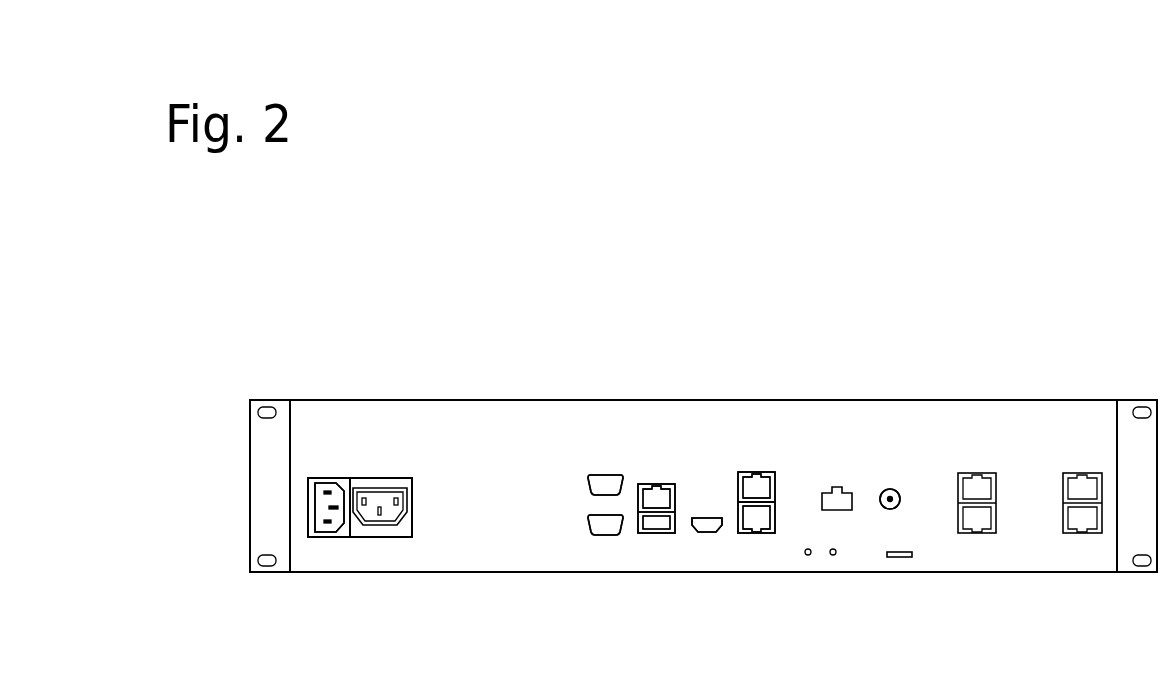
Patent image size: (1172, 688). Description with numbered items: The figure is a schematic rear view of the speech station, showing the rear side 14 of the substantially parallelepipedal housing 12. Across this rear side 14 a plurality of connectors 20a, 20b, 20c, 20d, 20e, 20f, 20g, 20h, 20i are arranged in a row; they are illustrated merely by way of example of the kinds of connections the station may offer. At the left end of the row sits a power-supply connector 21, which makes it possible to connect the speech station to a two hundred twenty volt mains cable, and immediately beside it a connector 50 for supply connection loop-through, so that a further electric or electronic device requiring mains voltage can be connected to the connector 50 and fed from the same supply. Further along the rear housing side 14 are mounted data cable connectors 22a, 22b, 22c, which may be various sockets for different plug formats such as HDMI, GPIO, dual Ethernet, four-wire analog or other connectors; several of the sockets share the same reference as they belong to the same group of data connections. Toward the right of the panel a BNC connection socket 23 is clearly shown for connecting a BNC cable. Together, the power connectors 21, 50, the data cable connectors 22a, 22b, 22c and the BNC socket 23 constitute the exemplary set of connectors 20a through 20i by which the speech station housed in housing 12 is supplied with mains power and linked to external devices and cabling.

The housing 12 is at (463, 553).
The rear side of the housing 14 is at (1016, 362).
The connector 20a is at (329, 468).
The connector 20b is at (402, 468).
The connector 20c is at (609, 466).
The connector 20d is at (628, 506).
The connector 20e is at (678, 472).
The connector 20f is at (708, 510).
The connector 20g is at (778, 466).
The connector 20h is at (789, 510).
The connector 20i is at (897, 482).
The power-supply connector 21 is at (337, 537).
The connector for supply connection loop-through 50 is at (381, 537).
The data cable connector 22a is at (588, 493).
The data cable connector 22b is at (617, 536).
The data cable connector 22c is at (762, 535).
The BNC connection socket 23 is at (900, 505).